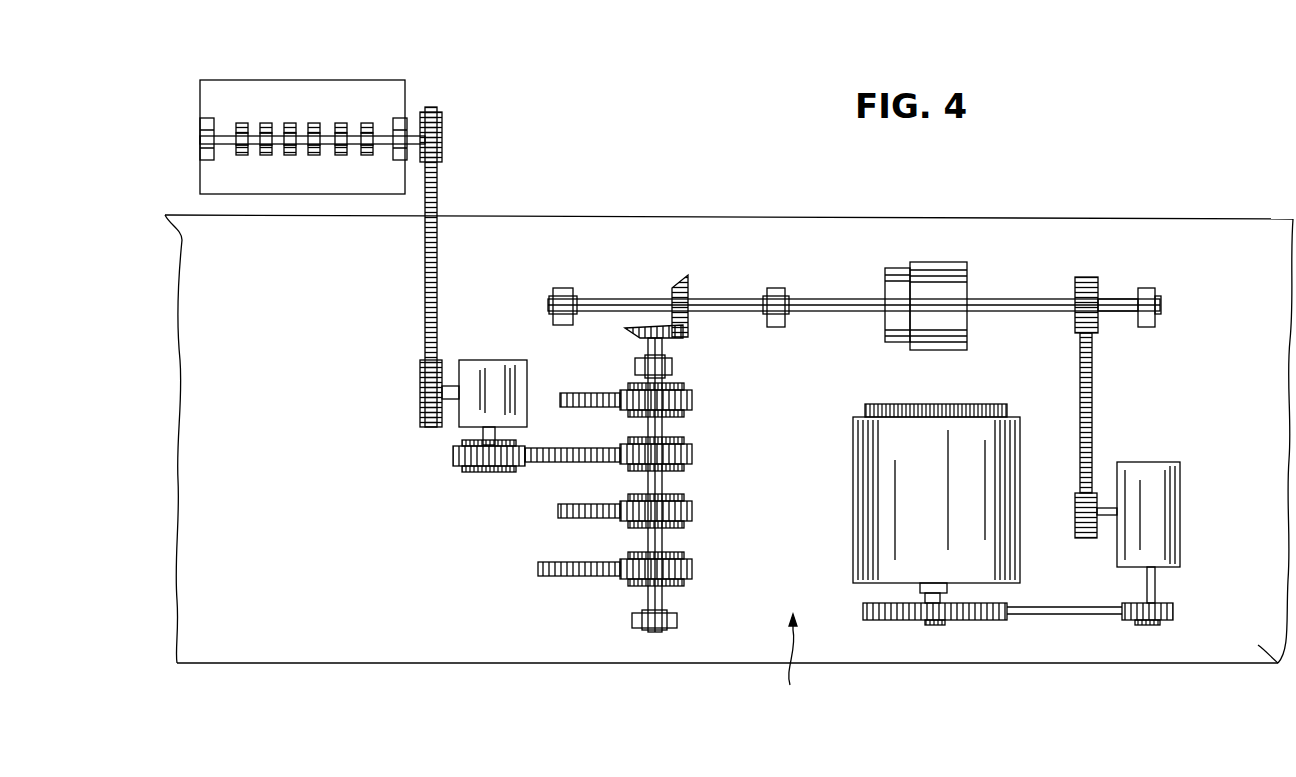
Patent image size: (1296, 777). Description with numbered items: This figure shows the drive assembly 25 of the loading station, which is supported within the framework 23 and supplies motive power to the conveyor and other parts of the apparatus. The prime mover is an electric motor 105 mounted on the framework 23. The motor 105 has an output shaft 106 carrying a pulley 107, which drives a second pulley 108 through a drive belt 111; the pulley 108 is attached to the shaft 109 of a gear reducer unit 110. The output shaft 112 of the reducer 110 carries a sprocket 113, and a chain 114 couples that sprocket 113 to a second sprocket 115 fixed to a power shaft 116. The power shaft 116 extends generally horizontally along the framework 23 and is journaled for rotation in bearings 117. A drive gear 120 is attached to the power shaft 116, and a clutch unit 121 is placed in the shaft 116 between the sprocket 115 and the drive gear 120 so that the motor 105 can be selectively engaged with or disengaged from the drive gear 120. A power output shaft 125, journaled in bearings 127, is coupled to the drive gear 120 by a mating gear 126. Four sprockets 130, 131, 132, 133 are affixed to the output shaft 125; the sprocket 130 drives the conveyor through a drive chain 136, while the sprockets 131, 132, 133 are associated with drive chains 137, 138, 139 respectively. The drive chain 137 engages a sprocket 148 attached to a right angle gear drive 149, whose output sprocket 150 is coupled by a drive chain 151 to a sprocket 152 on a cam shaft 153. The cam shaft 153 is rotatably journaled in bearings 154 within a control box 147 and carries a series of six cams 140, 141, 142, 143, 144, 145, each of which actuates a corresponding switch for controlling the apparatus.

The framework 23 is at (1274, 664).
The drive assembly 25 is at (799, 663).
The electric motor 105 is at (888, 460).
The output shaft 106 is at (920, 592).
The pulley 107 is at (985, 620).
The pulley 108 is at (1163, 620).
The shaft 109 is at (1158, 585).
The gear reducer unit 110 is at (1165, 530).
The drive belt 111 is at (1058, 615).
The output shaft 112 is at (1105, 510).
The sprocket 113 is at (1080, 530).
The chain 114 is at (1095, 385).
The second sprocket 115 is at (1077, 290).
The power shaft 116 is at (1123, 300).
The bearings 117 is at (566, 290).
The drive gear 120 is at (685, 290).
The clutch unit 121 is at (945, 268).
The power output shaft 125 is at (665, 538).
The mating gear 126 is at (688, 340).
The bearings 127 is at (637, 366).
The sprocket 130 is at (693, 395).
The sprocket 131 is at (693, 448).
The sprocket 132 is at (693, 503).
The sprocket 133 is at (693, 578).
The drive chain 136 is at (568, 407).
The drive chain 137 is at (552, 462).
The drive chain 138 is at (565, 518).
The drive chain 139 is at (562, 578).
The cam 140 is at (367, 158).
The cam 141 is at (341, 158).
The cam 142 is at (315, 158).
The cam 143 is at (291, 158).
The cam 144 is at (267, 158).
The cam 145 is at (245, 158).
The control box 147 is at (272, 80).
The sprocket 148 is at (460, 467).
The right angle gear drive 149 is at (493, 360).
The output sprocket 150 is at (420, 395).
The drive chain 151 is at (440, 255).
The sprocket 152 is at (445, 127).
The cam shaft 153 is at (382, 135).
The bearings 154 is at (400, 118).